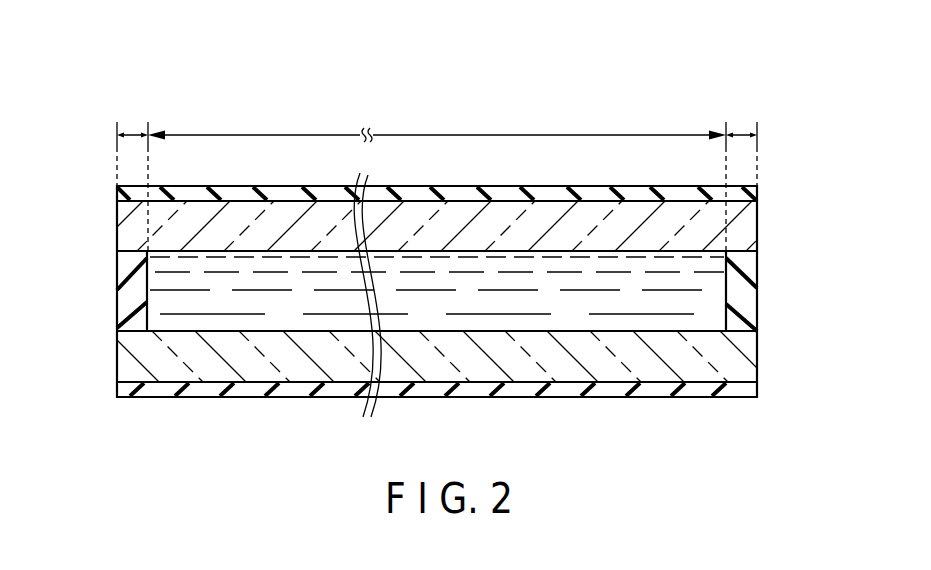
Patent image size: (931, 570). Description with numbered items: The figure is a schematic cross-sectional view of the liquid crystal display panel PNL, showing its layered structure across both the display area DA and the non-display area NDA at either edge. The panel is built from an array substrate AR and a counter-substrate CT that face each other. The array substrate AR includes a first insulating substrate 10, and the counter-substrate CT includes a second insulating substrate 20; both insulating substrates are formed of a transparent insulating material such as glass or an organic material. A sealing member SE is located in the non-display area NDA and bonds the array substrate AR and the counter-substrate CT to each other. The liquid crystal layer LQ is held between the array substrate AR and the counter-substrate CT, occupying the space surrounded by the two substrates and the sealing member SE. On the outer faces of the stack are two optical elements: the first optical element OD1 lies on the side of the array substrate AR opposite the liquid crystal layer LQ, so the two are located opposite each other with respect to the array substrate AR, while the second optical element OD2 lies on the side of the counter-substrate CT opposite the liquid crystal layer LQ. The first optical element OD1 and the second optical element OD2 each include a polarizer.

The liquid crystal display panel PNL is at (130, 73).
The non-display area NDA is at (436, 174).
The display area DA is at (437, 124).
The counter-substrate CT is at (103, 228).
The array substrate AR is at (103, 363).
The sealing member SE is at (128, 296).
The liquid crystal layer LQ is at (216, 310).
The second optical element OD2 is at (743, 197).
The first optical element OD1 is at (743, 392).
The second insulating substrate 20 is at (743, 233).
The first insulating substrate 10 is at (743, 356).